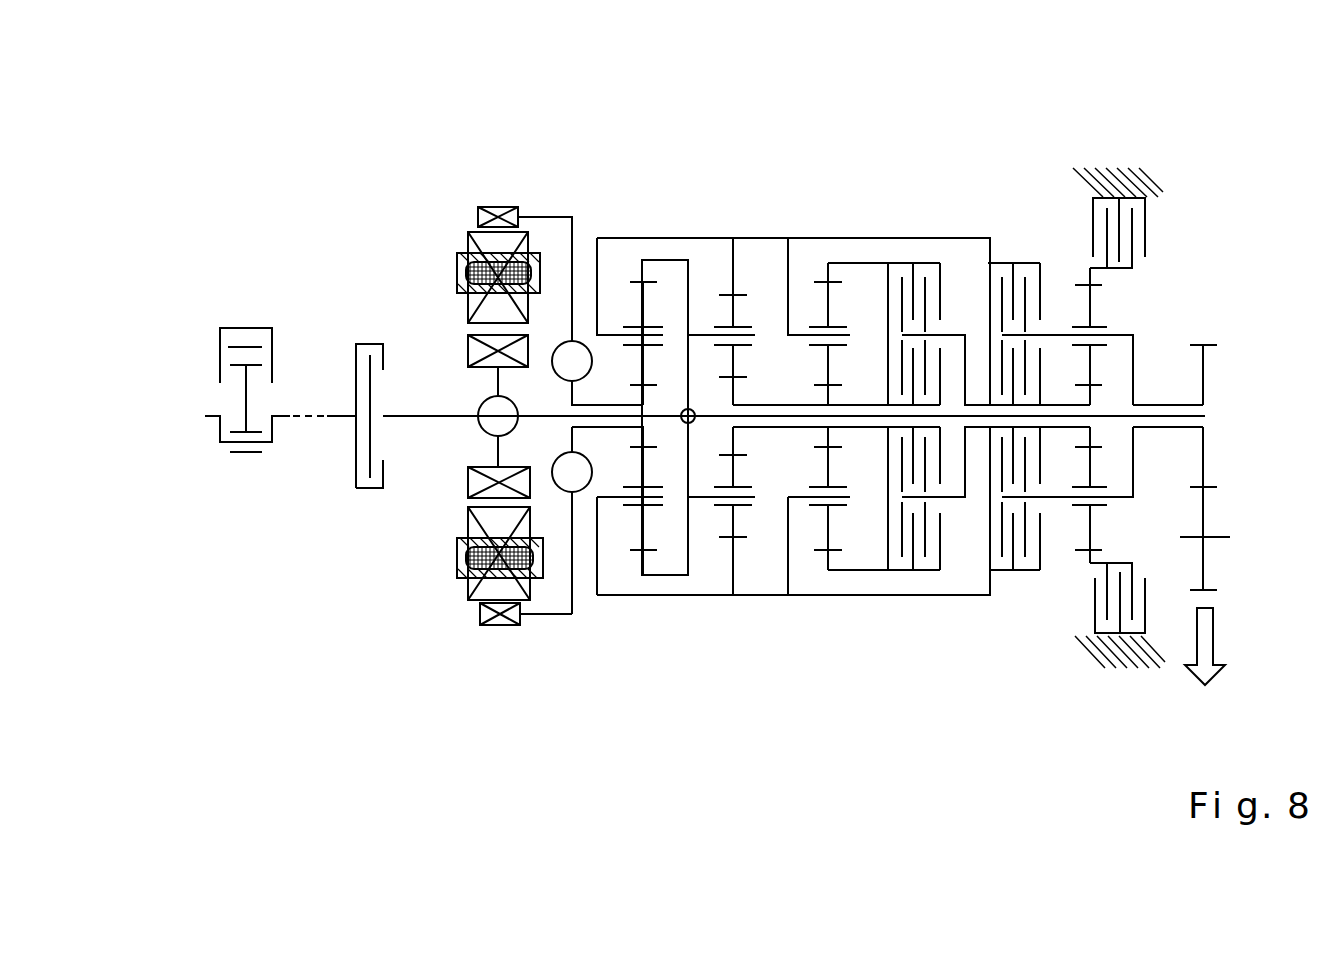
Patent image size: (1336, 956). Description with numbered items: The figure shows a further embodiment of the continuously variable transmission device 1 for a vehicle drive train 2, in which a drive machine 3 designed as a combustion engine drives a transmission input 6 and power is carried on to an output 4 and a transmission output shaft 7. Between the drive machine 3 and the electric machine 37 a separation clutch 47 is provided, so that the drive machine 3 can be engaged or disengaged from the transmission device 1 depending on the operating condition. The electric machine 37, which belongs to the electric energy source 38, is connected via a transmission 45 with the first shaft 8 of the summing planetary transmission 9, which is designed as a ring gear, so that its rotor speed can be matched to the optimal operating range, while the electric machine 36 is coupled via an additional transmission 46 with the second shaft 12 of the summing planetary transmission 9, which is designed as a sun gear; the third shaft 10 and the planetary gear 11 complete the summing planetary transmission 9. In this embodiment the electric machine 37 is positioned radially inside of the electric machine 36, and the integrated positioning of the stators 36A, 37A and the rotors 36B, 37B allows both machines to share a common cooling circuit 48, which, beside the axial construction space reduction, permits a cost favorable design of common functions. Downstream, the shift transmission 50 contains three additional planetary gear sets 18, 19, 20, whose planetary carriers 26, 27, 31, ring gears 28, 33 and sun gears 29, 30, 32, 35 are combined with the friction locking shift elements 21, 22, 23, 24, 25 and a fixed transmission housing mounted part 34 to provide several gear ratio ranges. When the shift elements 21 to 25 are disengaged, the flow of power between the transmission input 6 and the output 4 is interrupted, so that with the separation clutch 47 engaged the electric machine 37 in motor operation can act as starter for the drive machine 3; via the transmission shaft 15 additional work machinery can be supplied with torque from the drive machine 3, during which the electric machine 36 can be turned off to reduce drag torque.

The transmission device 1 is at (1186, 148).
The vehicle drive train 2 is at (288, 511).
The drive machine 3 is at (212, 313).
The output 4 is at (1177, 665).
The transmission input 6 is at (546, 437).
The transmission output shaft 7 is at (1205, 389).
The first shaft of the summing planetary transmission 8 is at (672, 260).
The summing planetary transmission 9 is at (630, 567).
The third shaft of the summing planetary transmission 10 is at (597, 312).
The planetary gear 11 is at (642, 310).
The second shaft of the summing planetary transmission 12 is at (638, 432).
The transmission shaft 15 is at (1107, 417).
The planetary gear set 18 is at (728, 615).
The planetary gear set 19 is at (832, 610).
The planetary gear set 20 is at (1073, 563).
The friction locking shift element 21 is at (933, 575).
The friction locking shift element 22 is at (947, 493).
The friction locking shift element 23 is at (1023, 258).
The friction locking shift element 24 is at (985, 345).
The friction locking shift element 25 is at (1156, 238).
The planetary carrier 26 is at (708, 500).
The planetary carrier 27 is at (800, 500).
The ring gear 28 is at (730, 268).
The sun gear 29 is at (737, 393).
The sun gear 30 is at (842, 395).
The planetary carrier 31 is at (1118, 500).
The sun gear 32 is at (1090, 433).
The ring gear 33 is at (1090, 526).
The fixed transmission housing mounted part 34 is at (1107, 181).
The sun gear 35 is at (830, 558).
The electric machine 36 is at (468, 221).
The stator 36A is at (468, 232).
The rotor 36B is at (500, 207).
The electric machine 37 is at (458, 514).
The stator 37A is at (477, 521).
The rotor 37B is at (477, 482).
The electric energy source 38 is at (410, 533).
The transmission 45 is at (484, 402).
The additional transmission 46 is at (553, 358).
The separation clutch 47 is at (345, 448).
The common cooling circuit 48 is at (458, 578).
The shift transmission 50 is at (817, 223).